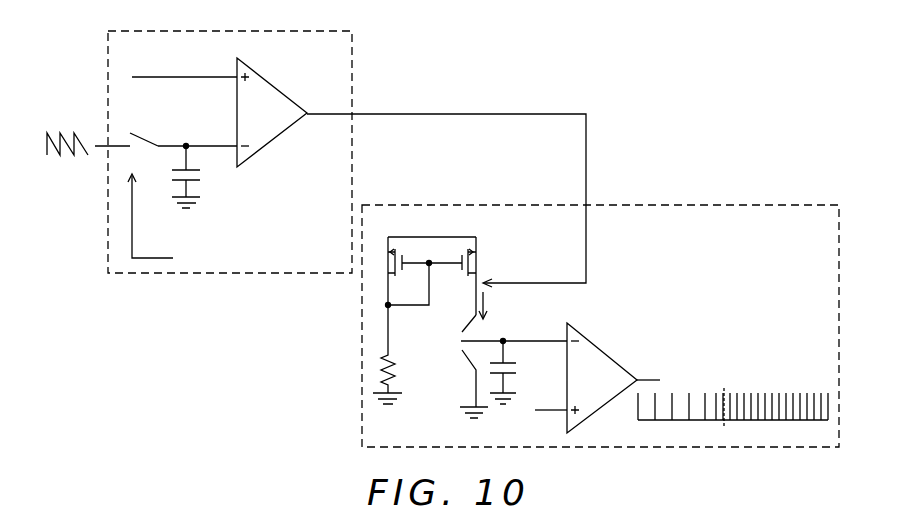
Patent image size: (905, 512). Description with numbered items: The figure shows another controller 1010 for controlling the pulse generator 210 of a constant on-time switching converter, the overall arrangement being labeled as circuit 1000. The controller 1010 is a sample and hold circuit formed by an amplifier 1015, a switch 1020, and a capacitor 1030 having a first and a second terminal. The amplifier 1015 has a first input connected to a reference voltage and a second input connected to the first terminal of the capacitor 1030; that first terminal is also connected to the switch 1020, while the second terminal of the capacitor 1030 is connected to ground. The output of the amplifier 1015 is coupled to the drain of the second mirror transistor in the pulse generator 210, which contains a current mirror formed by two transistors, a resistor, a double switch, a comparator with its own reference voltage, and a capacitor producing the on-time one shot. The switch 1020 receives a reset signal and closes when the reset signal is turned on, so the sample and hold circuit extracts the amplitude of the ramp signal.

The on-time generation circuit 1000 is at (150, 413).
The controller 1010 is at (352, 49).
The amplifier 1015 is at (276, 78).
The switch 1020 is at (151, 132).
The capacitor 1030 is at (214, 188).
The pulse generator 210 is at (766, 204).